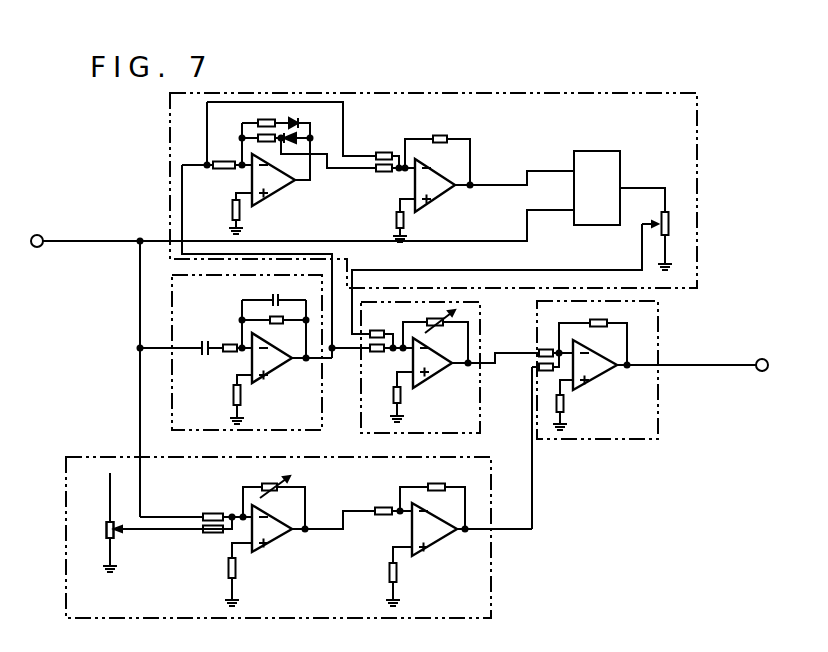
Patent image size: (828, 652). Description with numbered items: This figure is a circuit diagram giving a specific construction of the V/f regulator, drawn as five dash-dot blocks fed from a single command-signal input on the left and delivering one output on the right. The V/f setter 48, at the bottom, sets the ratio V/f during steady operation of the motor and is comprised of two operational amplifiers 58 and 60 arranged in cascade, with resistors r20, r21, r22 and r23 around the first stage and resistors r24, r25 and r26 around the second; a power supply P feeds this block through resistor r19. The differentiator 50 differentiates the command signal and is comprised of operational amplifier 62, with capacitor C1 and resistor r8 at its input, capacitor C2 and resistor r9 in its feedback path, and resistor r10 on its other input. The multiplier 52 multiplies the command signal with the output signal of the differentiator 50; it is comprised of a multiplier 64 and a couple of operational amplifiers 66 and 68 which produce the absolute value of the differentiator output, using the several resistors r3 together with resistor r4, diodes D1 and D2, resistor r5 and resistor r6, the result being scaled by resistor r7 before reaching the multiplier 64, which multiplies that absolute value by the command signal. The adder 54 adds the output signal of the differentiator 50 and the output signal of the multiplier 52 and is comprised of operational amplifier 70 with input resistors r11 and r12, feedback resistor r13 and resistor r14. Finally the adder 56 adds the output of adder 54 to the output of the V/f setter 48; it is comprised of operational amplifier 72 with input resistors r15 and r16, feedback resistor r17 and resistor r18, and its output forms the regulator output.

The V/f setter 48 is at (491, 560).
The differentiator 50 is at (322, 400).
The multiplier 52 is at (697, 172).
The adder 54 is at (480, 398).
The adder 56 is at (658, 400).
The operational amplifier 58 is at (280, 541).
The operational amplifier 60 is at (438, 548).
The operational amplifier 62 is at (283, 371).
The multiplier 64 is at (598, 226).
The operational amplifier 66 is at (285, 191).
The operational amplifier 68 is at (450, 190).
The operational amplifier 70 is at (437, 370).
The operational amplifier 72 is at (604, 382).
The resistor r3 is at (268, 118).
The resistor r4 is at (233, 209).
The resistor r5 is at (440, 138).
The resistor r6 is at (408, 213).
The resistor r7 is at (669, 217).
The resistor r8 is at (230, 344).
The resistor r9 is at (276, 324).
The resistor r10 is at (234, 393).
The resistor r11 is at (376, 331).
The resistor r12 is at (378, 353).
The resistor r13 is at (432, 327).
The resistor r14 is at (400, 400).
The resistor r15 is at (547, 349).
The resistor r16 is at (540, 366).
The resistor r17 is at (606, 320).
The resistor r18 is at (562, 402).
The resistor r19 is at (113, 538).
The resistor r20 is at (213, 513).
The resistor r21 is at (215, 533).
The resistor r22 is at (266, 486).
The resistor r23 is at (234, 581).
The resistor r24 is at (382, 511).
The resistor r25 is at (444, 487).
The resistor r26 is at (395, 579).
The power supply P is at (167, 521).
The capacitor C1 is at (205, 341).
The capacitor C2 is at (279, 291).
The diode D1 is at (291, 121).
The diode D2 is at (300, 140).